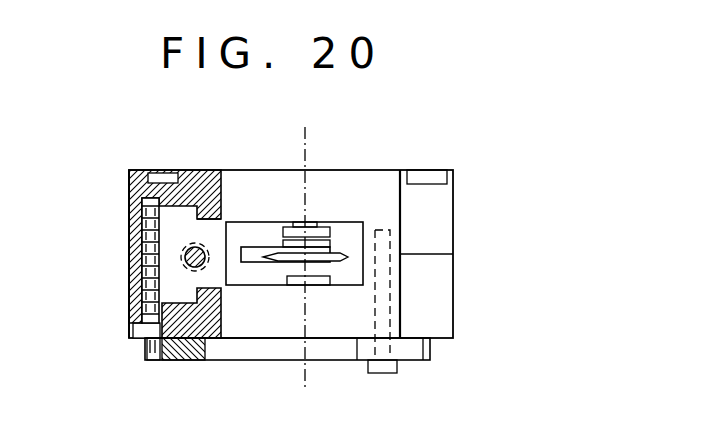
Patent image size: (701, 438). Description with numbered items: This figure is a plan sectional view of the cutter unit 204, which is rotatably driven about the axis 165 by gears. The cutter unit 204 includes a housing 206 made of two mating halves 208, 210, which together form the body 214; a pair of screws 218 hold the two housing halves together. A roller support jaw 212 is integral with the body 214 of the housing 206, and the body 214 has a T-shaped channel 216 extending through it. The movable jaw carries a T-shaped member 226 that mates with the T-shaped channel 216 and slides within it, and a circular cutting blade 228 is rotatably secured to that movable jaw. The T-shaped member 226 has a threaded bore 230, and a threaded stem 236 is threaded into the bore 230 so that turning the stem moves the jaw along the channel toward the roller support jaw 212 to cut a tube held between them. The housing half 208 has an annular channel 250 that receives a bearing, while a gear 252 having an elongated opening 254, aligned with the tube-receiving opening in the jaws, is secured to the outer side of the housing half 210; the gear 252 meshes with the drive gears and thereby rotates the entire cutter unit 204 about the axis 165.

The cutter unit 204 is at (449, 141).
The housing 206 is at (100, 218).
The housing half 208 is at (197, 168).
The housing half 210 is at (142, 291).
The roller support jaw 212 is at (453, 248).
The body 214 is at (128, 223).
The T-shaped channel 216 is at (217, 170).
The screws 218 is at (147, 338).
The T-shaped member 226 is at (190, 289).
The circular cutting blade 228 is at (340, 255).
The threaded bore 230 is at (212, 262).
The threaded stem 236 is at (183, 257).
The annular channel 250 is at (435, 177).
The gear 252 is at (176, 362).
The elongated opening 254 is at (337, 355).
The axis 165 is at (318, 167).